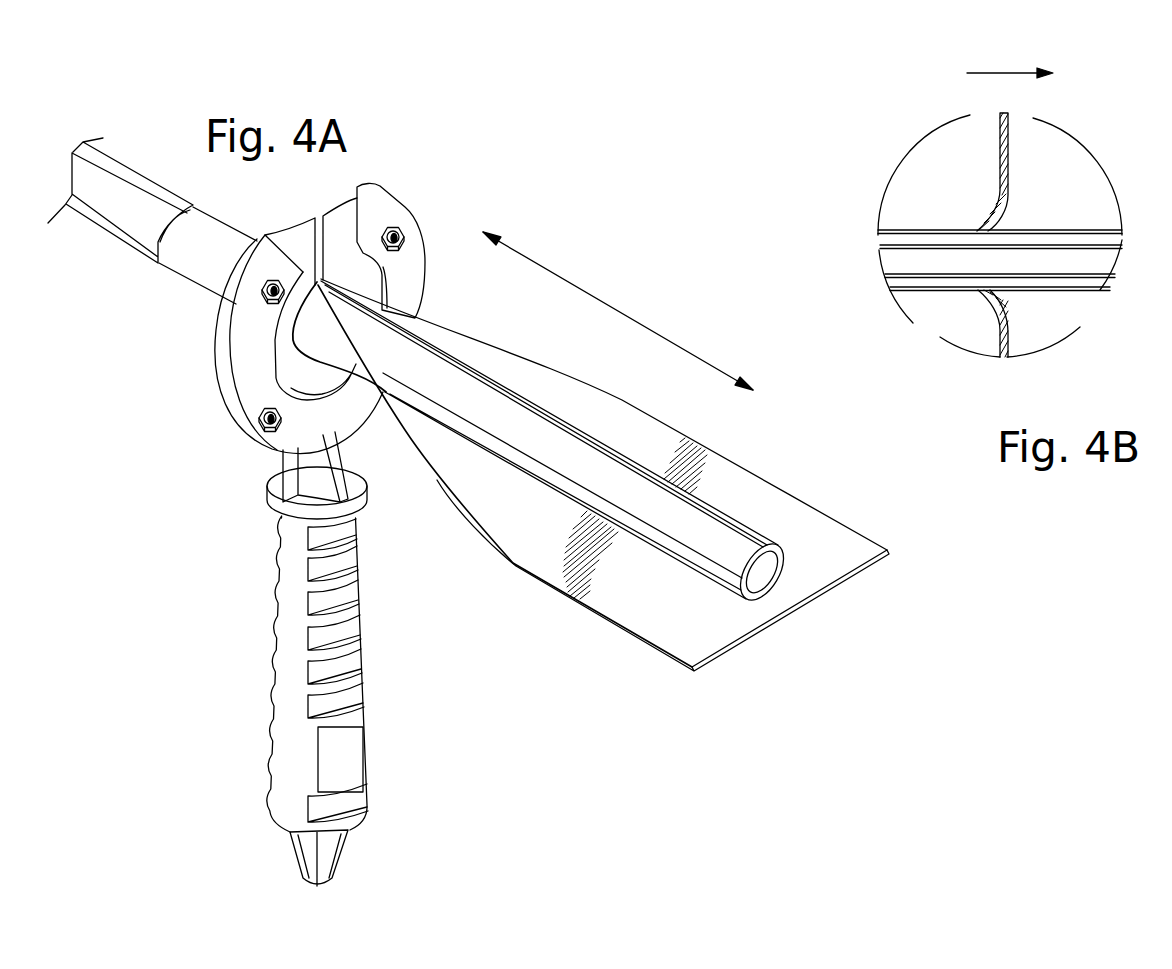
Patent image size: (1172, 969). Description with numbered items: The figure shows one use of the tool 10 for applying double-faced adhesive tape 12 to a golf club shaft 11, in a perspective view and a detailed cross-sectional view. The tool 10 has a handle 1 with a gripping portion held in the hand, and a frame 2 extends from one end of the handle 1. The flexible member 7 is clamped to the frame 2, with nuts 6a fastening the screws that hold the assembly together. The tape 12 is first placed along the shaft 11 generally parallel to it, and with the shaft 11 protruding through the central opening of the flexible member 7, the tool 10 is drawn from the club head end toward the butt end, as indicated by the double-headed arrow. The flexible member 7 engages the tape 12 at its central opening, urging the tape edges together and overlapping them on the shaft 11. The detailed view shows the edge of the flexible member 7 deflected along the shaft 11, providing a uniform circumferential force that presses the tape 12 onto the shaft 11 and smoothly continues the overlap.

In FIG. 4A, the handle 1 is at (295, 750).
In FIG. 4A, the frame 2 is at (260, 400).
In FIG. 4A, the nuts 6a is at (262, 297).
In FIG. 4A, the flexible member 7 is at (307, 374).
In FIG. 4B, the flexible member 7 is at (1008, 174).
In FIG. 4A, the tool 10 is at (425, 755).
In FIG. 4A, the shaft 11 is at (667, 522).
In FIG. 4B, the shaft 11 is at (1035, 267).
In FIG. 4A, the double-faced adhesive tape 12 is at (672, 608).